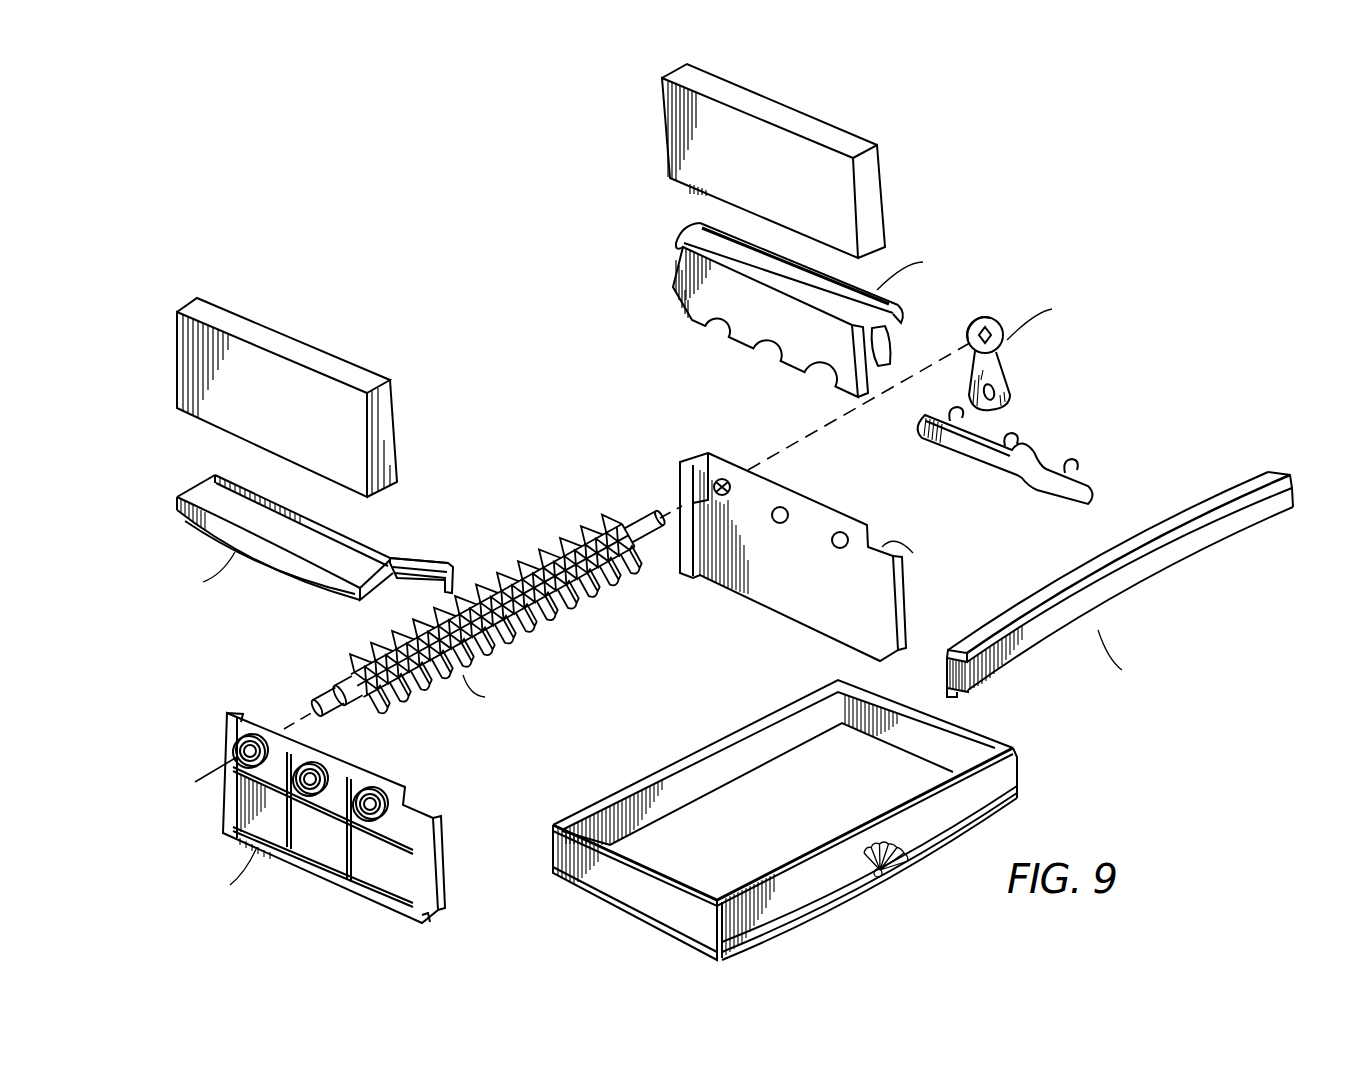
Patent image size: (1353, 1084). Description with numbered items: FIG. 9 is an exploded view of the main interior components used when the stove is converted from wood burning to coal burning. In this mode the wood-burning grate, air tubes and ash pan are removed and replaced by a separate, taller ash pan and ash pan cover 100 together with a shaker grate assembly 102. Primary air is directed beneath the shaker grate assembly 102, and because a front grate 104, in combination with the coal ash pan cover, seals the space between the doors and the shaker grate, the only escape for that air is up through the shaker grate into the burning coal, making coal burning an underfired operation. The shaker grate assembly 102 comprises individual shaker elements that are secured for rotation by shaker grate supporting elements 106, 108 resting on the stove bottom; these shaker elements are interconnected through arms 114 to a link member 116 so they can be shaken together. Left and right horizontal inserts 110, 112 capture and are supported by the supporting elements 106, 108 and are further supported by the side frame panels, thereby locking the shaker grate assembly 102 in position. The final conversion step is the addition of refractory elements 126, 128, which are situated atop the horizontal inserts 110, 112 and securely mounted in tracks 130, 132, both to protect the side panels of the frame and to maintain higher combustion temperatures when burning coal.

The ash pan and ash pan cover 100 is at (1022, 780).
The shaker grate assembly 102 is at (1048, 418).
The front grate 104 is at (598, 518).
The shaker grate supporting element 106 is at (815, 623).
The shaker grate supporting element 108 is at (437, 847).
The left horizontal insert 110 is at (276, 554).
The right horizontal insert 112 is at (932, 310).
The arm 114 is at (1010, 381).
The link member 116 is at (1063, 494).
The refractory element 126 is at (388, 450).
The refractory element 128 is at (670, 150).
The track 130 is at (377, 592).
The track 132 is at (886, 322).